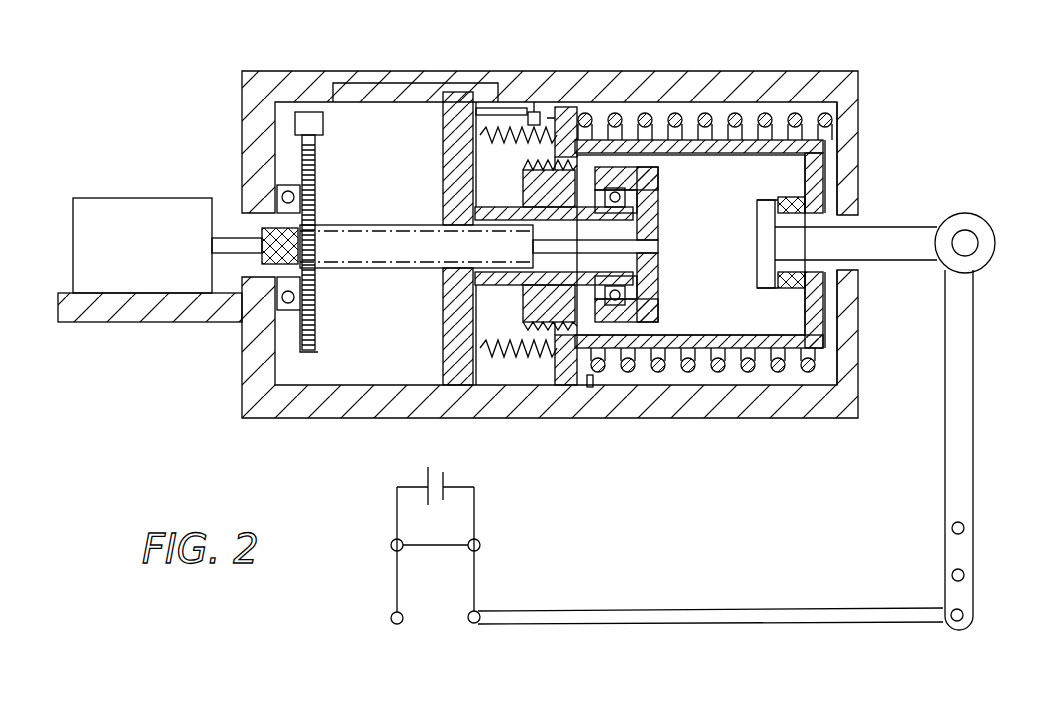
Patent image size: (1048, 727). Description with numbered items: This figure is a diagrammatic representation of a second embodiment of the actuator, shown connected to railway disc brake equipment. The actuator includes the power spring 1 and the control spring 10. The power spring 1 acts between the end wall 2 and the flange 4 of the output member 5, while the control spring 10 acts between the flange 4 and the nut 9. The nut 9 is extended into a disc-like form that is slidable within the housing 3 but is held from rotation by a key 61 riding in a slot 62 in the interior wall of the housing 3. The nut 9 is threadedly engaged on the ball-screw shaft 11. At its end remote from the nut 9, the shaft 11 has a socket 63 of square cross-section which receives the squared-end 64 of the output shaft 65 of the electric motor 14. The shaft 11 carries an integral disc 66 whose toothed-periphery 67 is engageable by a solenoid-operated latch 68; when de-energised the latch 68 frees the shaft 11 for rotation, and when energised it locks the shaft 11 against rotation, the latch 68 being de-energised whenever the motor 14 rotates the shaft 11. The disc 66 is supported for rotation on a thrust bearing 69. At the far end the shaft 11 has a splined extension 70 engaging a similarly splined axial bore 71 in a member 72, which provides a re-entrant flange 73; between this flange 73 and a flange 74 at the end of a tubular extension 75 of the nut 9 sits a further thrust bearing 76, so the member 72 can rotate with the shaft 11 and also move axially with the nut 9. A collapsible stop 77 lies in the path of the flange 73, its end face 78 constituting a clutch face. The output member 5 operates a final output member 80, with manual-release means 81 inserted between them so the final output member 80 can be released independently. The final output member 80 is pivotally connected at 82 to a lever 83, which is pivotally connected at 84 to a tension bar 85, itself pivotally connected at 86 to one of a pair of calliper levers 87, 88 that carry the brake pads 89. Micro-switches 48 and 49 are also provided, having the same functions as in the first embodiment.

The power spring 1 is at (676, 105).
The end wall 2 is at (848, 125).
The housing 3 is at (297, 423).
The flange 4 is at (565, 120).
The output member 5 is at (778, 342).
The nut 9 is at (445, 352).
The control spring 10 is at (495, 128).
The ball-screw shaft 11 is at (440, 237).
The electric motor 14 is at (128, 260).
The micro-switch 48 is at (535, 112).
The micro-switch 49 is at (588, 388).
The key 61 is at (458, 103).
The slot 62 is at (375, 92).
The socket 63 is at (262, 265).
The squared-end 64 is at (262, 232).
The output shaft 65 is at (228, 247).
The disc 66 is at (318, 322).
The toothed-periphery 67 is at (290, 322).
The solenoid-operated latch 68 is at (310, 105).
The thrust bearing 69 is at (305, 352).
The splined extension 70 is at (640, 243).
The splined axial bore 71 is at (640, 252).
The member 72 is at (662, 175).
The re-entrant flange 73 is at (625, 198).
The flange 74 is at (630, 297).
The tubular extension 75 is at (488, 207).
The thrust bearing 76 is at (617, 302).
The collapsible stop 77 is at (545, 300).
The end face 78 is at (557, 380).
The final output member 80 is at (875, 250).
The manual-release means 81 is at (785, 290).
The pivotal connection 82 is at (968, 250).
The lever 83 is at (975, 418).
The pivotal connection 84 is at (960, 614).
The tension bar 85 is at (695, 620).
The pivotal connection 86 is at (471, 623).
The calliper lever 87 is at (478, 575).
The calliper lever 88 is at (395, 575).
The brake pads 89 is at (445, 487).